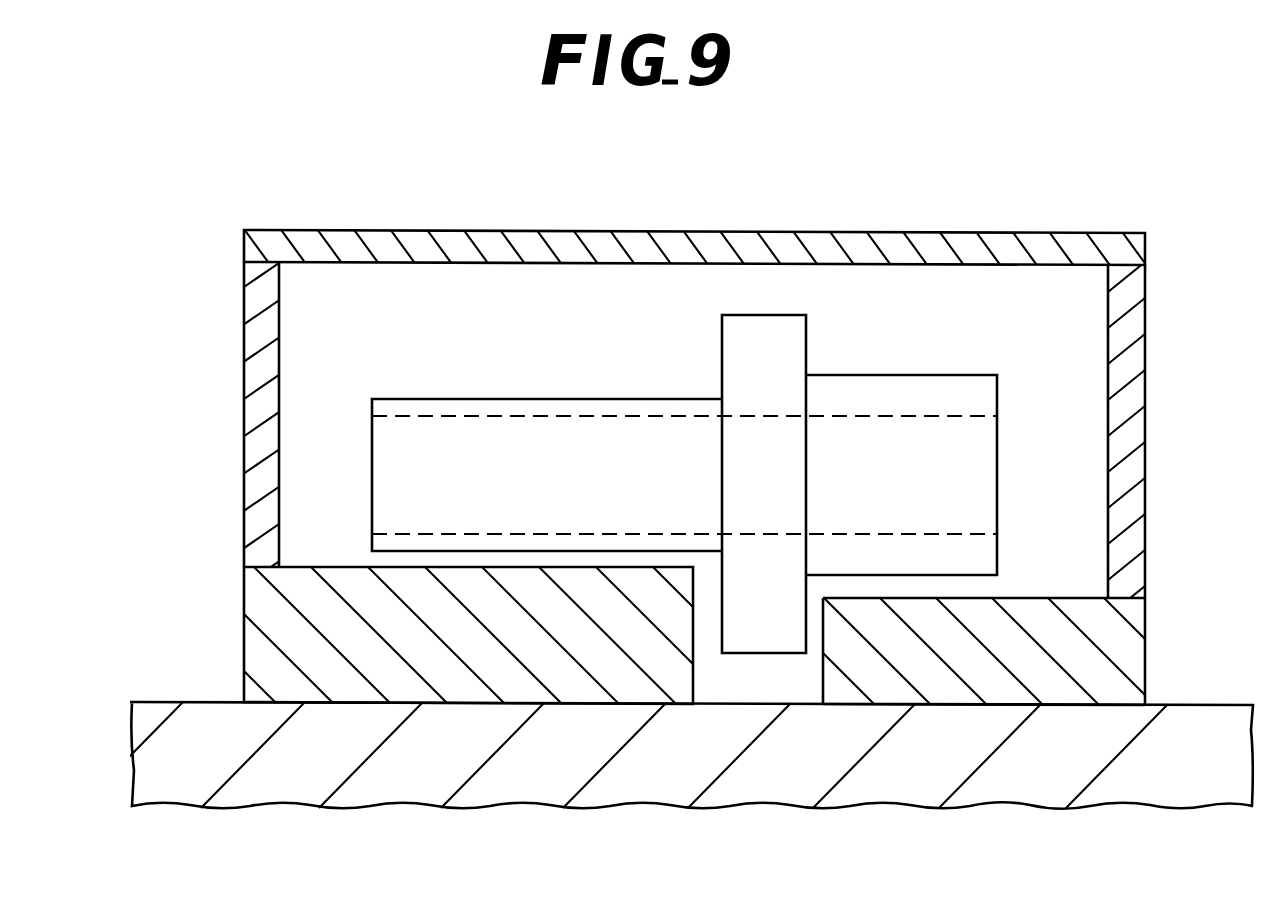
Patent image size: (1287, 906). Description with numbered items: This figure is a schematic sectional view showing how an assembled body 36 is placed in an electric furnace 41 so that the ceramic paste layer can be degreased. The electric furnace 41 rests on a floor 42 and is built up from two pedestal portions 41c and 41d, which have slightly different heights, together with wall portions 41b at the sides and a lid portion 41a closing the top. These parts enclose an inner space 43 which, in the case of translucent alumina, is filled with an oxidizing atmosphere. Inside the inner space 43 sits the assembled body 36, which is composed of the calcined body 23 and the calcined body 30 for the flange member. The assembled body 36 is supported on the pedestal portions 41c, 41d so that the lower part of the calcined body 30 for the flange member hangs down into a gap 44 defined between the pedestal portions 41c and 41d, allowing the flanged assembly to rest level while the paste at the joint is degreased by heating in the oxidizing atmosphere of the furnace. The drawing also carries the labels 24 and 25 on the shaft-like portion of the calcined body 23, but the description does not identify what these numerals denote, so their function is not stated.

The calcined body 23 is at (723, 482).
The shaft 24 is at (600, 399).
The shaft end portion 25 is at (952, 388).
The calcined body for the flange member 30 is at (785, 345).
The assembled body 36 is at (705, 308).
The electric furnace 41 is at (680, 431).
The lid portion 41a is at (998, 245).
The wall portion 41b is at (1130, 392).
The pedestal portion 41c is at (1037, 610).
The pedestal portion 41d is at (318, 597).
The floor 42 is at (1208, 727).
The inner space 43 is at (520, 324).
The gap 44 is at (823, 672).